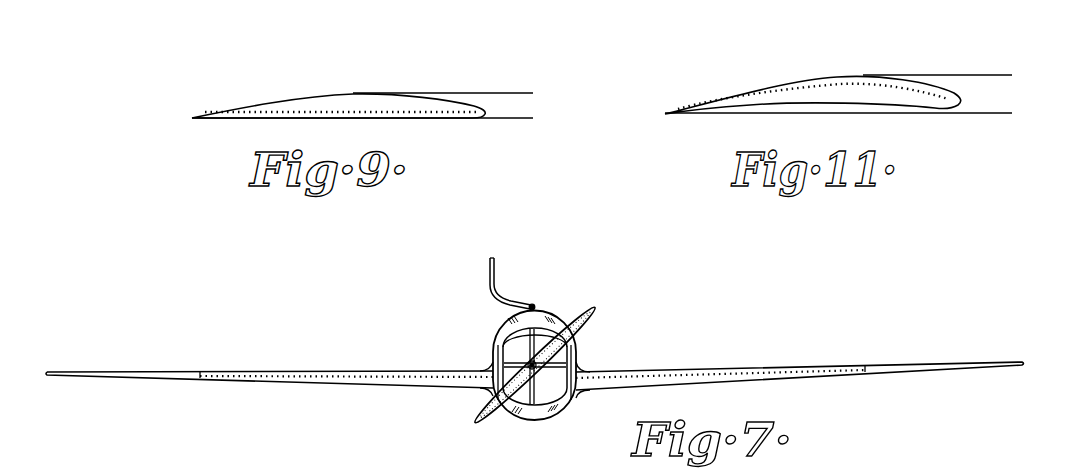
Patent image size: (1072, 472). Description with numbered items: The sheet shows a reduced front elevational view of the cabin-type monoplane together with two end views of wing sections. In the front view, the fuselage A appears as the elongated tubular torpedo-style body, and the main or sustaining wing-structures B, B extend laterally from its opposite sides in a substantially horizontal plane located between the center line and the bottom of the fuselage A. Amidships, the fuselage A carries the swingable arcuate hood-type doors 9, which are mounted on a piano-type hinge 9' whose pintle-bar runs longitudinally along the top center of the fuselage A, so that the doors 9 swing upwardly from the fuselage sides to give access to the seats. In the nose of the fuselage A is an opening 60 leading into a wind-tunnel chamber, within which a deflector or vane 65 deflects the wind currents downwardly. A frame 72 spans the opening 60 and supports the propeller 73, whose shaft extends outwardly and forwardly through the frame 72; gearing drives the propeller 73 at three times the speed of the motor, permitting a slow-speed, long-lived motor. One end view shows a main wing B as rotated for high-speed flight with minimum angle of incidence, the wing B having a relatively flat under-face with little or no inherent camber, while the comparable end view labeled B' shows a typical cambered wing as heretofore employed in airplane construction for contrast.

In FIG. 7, the hood-type door 9 is at (510, 283).
In FIG. 7, the piano-type hinge 9' is at (551, 297).
In FIG. 7, the propeller 73 is at (597, 318).
In FIG. 7, the fuselage A is at (576, 338).
In FIG. 7, the frame 72 is at (577, 365).
In FIG. 7, the deflector or vane 65 is at (498, 343).
In FIG. 7, the opening 60 is at (548, 393).
In FIG. 9, the main wing-structure B is at (338, 87).
In FIG. 7, the main wing-structure B is at (535, 368).
In FIG. 11, the modified wing B' is at (813, 78).